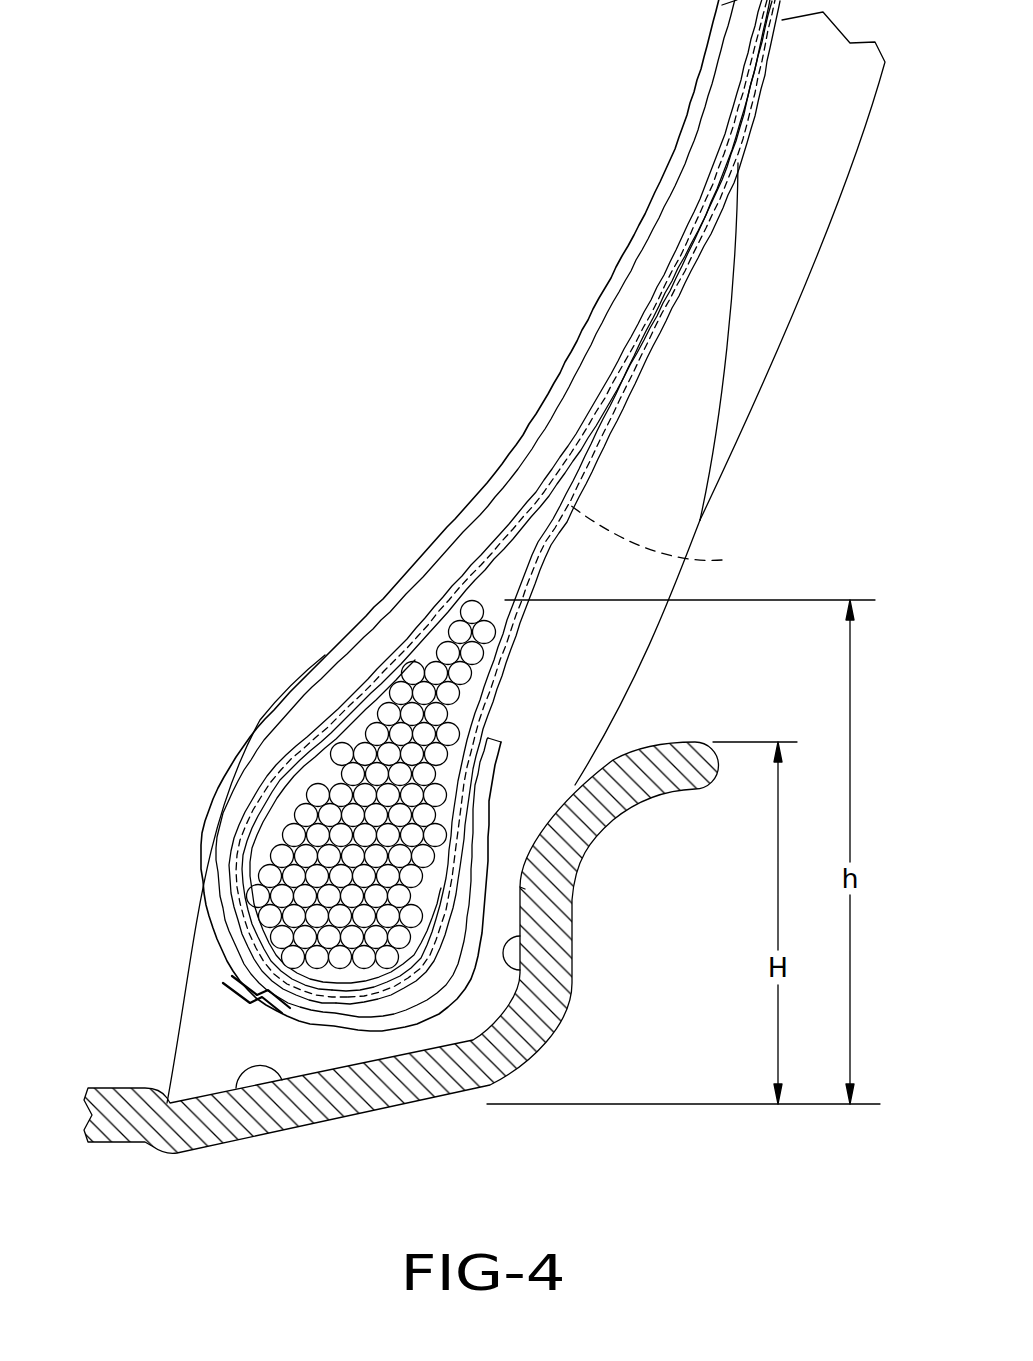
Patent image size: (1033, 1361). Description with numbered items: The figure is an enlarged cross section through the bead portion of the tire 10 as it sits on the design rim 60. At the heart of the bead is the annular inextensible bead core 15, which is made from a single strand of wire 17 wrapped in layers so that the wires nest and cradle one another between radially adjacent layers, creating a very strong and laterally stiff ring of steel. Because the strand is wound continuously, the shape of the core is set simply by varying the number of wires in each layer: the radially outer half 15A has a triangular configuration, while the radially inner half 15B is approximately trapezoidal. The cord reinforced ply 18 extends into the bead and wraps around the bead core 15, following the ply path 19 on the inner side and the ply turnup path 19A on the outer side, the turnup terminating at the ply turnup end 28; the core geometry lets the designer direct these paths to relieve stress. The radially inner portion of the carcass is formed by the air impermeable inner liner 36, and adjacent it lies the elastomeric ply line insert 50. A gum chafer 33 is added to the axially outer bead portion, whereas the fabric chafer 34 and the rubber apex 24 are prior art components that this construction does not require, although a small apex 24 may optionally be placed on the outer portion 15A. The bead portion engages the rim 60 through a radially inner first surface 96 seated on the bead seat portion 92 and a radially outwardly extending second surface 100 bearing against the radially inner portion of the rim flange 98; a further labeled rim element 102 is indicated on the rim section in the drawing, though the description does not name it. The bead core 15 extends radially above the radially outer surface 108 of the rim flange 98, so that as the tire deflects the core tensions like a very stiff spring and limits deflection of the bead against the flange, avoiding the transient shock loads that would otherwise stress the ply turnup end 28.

The tire 10 is at (768, 358).
The bead core 15 is at (330, 773).
The radially outer half of the bead core 15A is at (412, 673).
The radially inner half of the bead core 15B is at (258, 895).
The wire 17 is at (282, 855).
The ply 18 is at (658, 292).
The ply path 19 is at (548, 478).
The ply turnup path 19A is at (673, 540).
The apex 24 is at (502, 578).
The ply turnup end 28 is at (617, 415).
The gum chafer 33 is at (630, 663).
The fabric chafer 34 is at (280, 1010).
The inner liner 36 is at (585, 353).
The ply line insert 50 is at (683, 205).
The rim 60 is at (655, 795).
The bead seat portion 92 is at (423, 1088).
The first surface 96 is at (240, 1077).
The rim flange 98 is at (520, 972).
The second surface 100 is at (523, 888).
The bead seat 102 is at (358, 1113).
The radially outer surface of the rim flange 108 is at (653, 742).